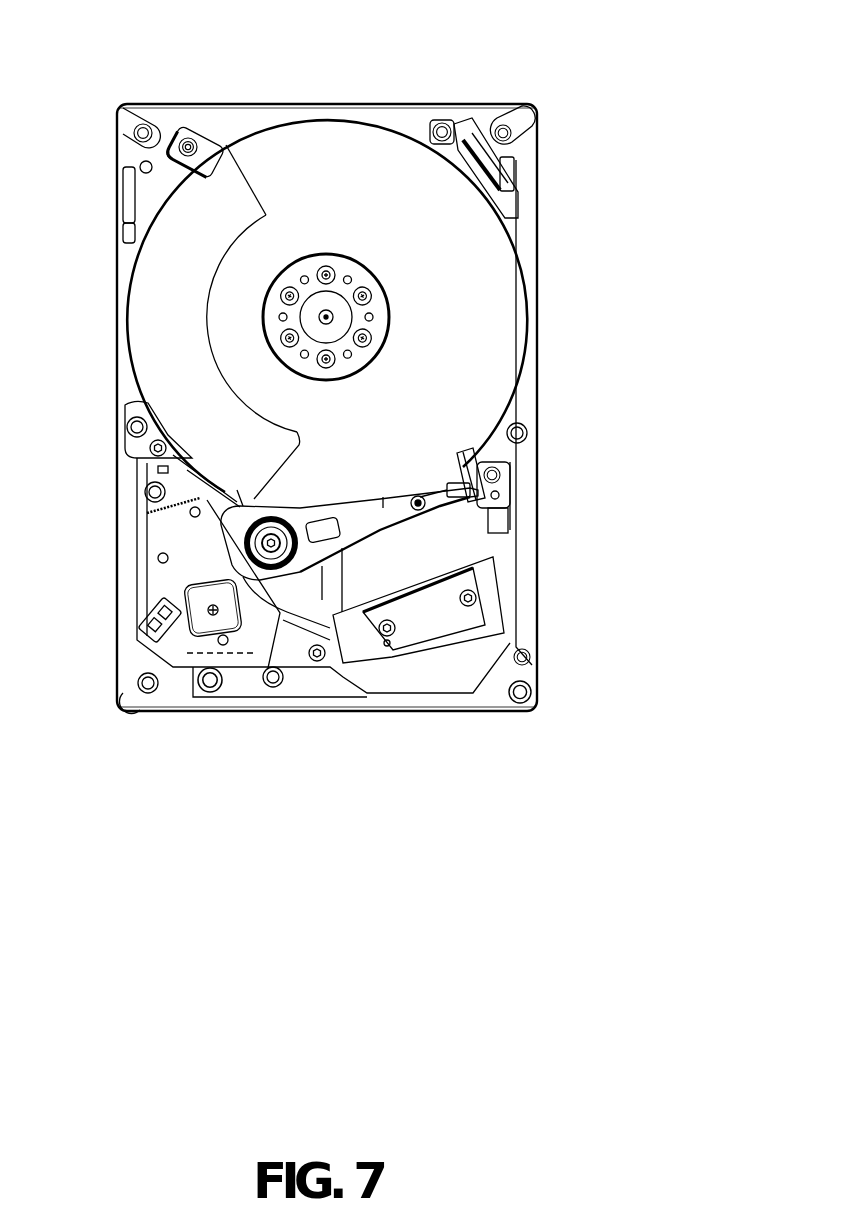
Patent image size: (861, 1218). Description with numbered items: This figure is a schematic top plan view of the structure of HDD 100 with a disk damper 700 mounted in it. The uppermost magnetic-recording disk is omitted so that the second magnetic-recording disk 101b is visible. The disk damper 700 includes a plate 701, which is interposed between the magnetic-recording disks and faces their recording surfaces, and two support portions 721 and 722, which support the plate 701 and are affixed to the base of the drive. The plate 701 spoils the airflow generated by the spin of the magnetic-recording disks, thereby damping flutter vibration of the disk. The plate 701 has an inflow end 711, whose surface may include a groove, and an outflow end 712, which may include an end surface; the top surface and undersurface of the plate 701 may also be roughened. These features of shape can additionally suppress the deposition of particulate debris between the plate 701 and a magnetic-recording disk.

The HDD 100 is at (512, 40).
The second magnetic-recording disk 101b is at (490, 388).
The disk damper 700 is at (258, 239).
The plate 701 is at (205, 353).
The inflow end 711 is at (252, 184).
The outflow end 712 is at (290, 461).
The support portion 721 is at (211, 152).
The support portion 722 is at (143, 403).